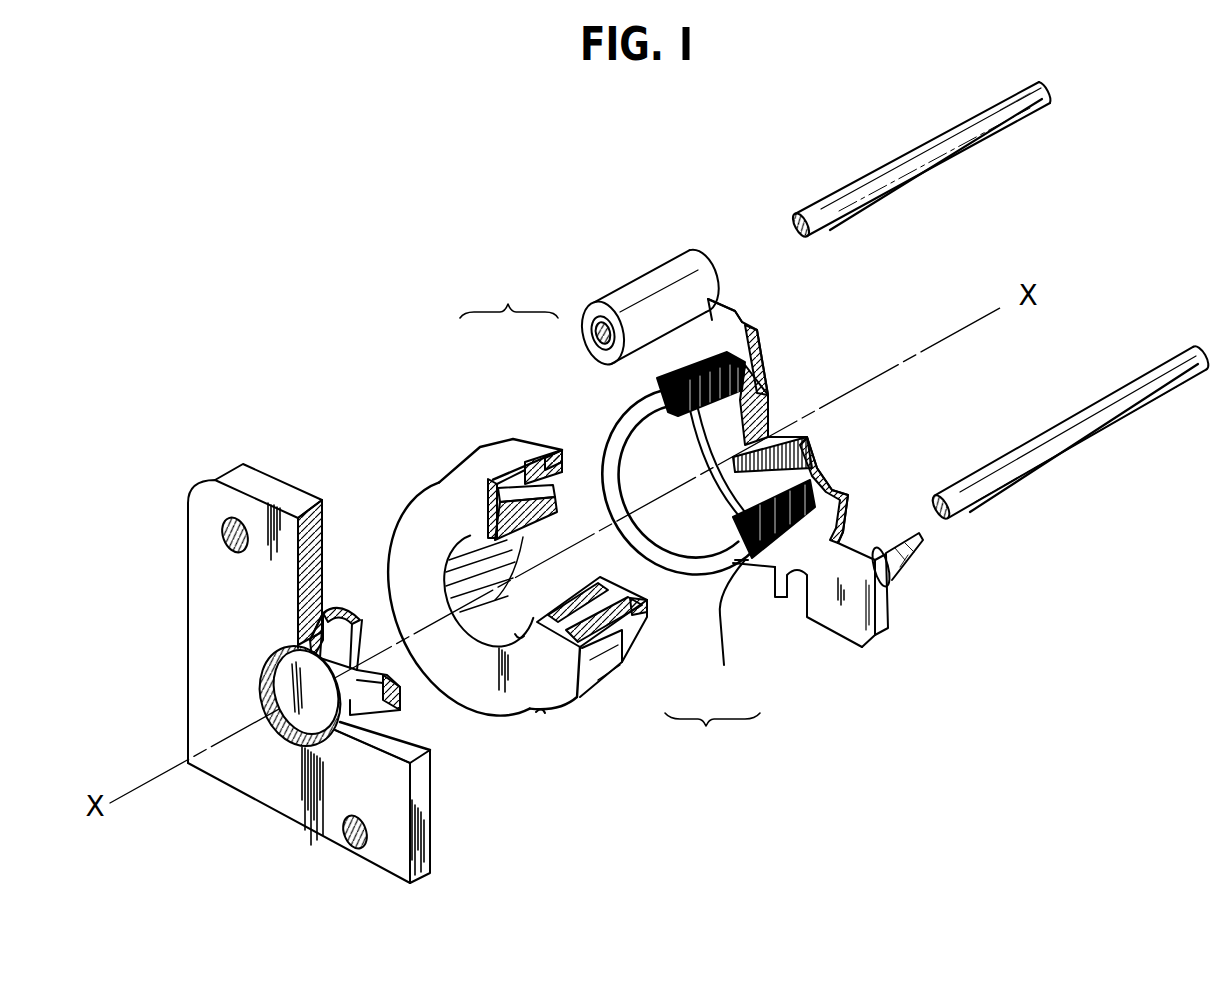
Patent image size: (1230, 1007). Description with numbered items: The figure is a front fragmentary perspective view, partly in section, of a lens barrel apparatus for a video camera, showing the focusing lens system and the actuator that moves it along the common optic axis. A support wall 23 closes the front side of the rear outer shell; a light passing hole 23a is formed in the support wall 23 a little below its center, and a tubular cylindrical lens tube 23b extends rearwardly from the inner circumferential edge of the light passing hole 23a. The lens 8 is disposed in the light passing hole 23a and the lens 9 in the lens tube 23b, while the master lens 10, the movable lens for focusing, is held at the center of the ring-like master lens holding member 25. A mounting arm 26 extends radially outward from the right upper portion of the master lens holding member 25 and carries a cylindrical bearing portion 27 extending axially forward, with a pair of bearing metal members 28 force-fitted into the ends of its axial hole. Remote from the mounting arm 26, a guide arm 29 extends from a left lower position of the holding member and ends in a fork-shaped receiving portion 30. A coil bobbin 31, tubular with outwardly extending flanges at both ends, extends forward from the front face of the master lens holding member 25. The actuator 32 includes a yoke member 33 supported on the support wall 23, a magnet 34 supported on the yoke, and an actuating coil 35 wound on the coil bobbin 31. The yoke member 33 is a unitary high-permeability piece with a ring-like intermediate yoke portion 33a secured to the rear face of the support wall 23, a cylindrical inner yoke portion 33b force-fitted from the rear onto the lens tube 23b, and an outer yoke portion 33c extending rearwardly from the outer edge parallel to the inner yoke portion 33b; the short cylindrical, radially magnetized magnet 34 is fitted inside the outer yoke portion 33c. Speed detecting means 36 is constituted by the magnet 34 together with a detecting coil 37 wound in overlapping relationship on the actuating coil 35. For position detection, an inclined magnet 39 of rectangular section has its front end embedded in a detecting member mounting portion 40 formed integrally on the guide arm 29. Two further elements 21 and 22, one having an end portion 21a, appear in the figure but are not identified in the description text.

The lens 8 is at (288, 732).
The lens 9 is at (432, 695).
The master lens 10 is at (797, 448).
The guide rod 21 is at (920, 155).
The rod end portion 21a is at (957, 128).
The guide rod 22 is at (1105, 415).
The support wall 23 is at (344, 673).
The light passing hole 23a is at (280, 735).
The lens tube 23b is at (333, 612).
The master lens holding member 25 is at (745, 455).
The mounting arm 26 is at (718, 325).
The bearing portion 27 is at (645, 283).
The bearing metal members 28 is at (595, 318).
The guide arm 29 is at (785, 560).
The fork-shaped receiving portion 30 is at (795, 600).
The coil bobbin 31 is at (725, 540).
The actuator 32 is at (509, 297).
The yoke member 33 is at (504, 575).
The intermediate yoke portion 33a is at (422, 510).
The inner yoke portion 33b is at (520, 645).
The outer yoke portion 33c is at (500, 458).
The magnet 34 is at (570, 457).
The actuating coil 35 is at (625, 455).
The speed detecting means 36 is at (712, 732).
The detecting coil 37 is at (724, 665).
The inclined magnet 39 is at (917, 550).
The detecting member mounting portion 40 is at (888, 607).